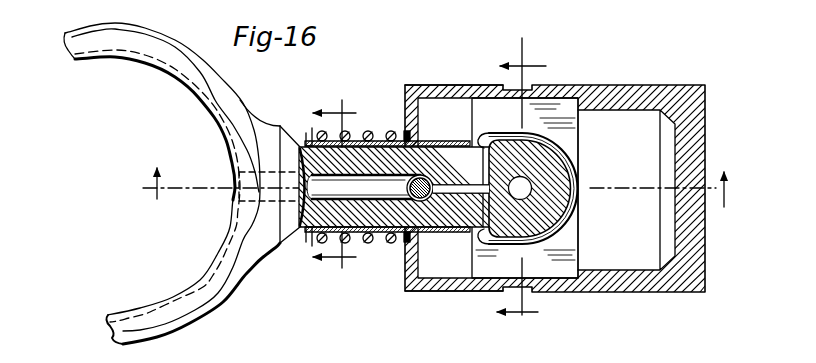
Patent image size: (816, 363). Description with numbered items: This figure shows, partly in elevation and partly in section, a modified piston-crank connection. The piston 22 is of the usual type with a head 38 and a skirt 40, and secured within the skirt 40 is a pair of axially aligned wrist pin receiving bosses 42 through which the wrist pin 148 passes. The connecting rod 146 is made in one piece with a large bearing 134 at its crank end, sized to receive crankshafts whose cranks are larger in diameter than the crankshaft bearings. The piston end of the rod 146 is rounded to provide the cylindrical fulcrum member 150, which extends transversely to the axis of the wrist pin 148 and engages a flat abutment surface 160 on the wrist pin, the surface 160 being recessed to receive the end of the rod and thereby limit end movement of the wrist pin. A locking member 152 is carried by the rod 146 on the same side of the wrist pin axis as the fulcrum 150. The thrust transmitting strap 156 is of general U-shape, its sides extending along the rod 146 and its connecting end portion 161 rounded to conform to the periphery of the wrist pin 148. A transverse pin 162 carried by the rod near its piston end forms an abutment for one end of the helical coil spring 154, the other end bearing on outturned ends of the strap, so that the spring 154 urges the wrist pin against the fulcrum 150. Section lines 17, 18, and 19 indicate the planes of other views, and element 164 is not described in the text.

The large bearing 134 is at (214, 271).
The section line 17- 17 is at (432, 187).
The section line 18- 18 is at (521, 188).
The section line 19- 19 is at (334, 184).
The piston 22 is at (462, 86).
The head 38 is at (706, 113).
The skirt 40 is at (437, 288).
The wrist pin receiving bosses 42 is at (565, 118).
The connecting rod 146 is at (385, 242).
The wrist pin 148 is at (572, 172).
The fulcrum member 150 is at (490, 240).
The locking member 152 is at (500, 152).
The helical coil spring 154 is at (348, 136).
The strap 156 is at (438, 233).
The flat abutment surface 160 is at (484, 152).
The connecting end portion 161 is at (578, 201).
The transverse pin 162 is at (408, 189).
The bracket 164 is at (306, 246).